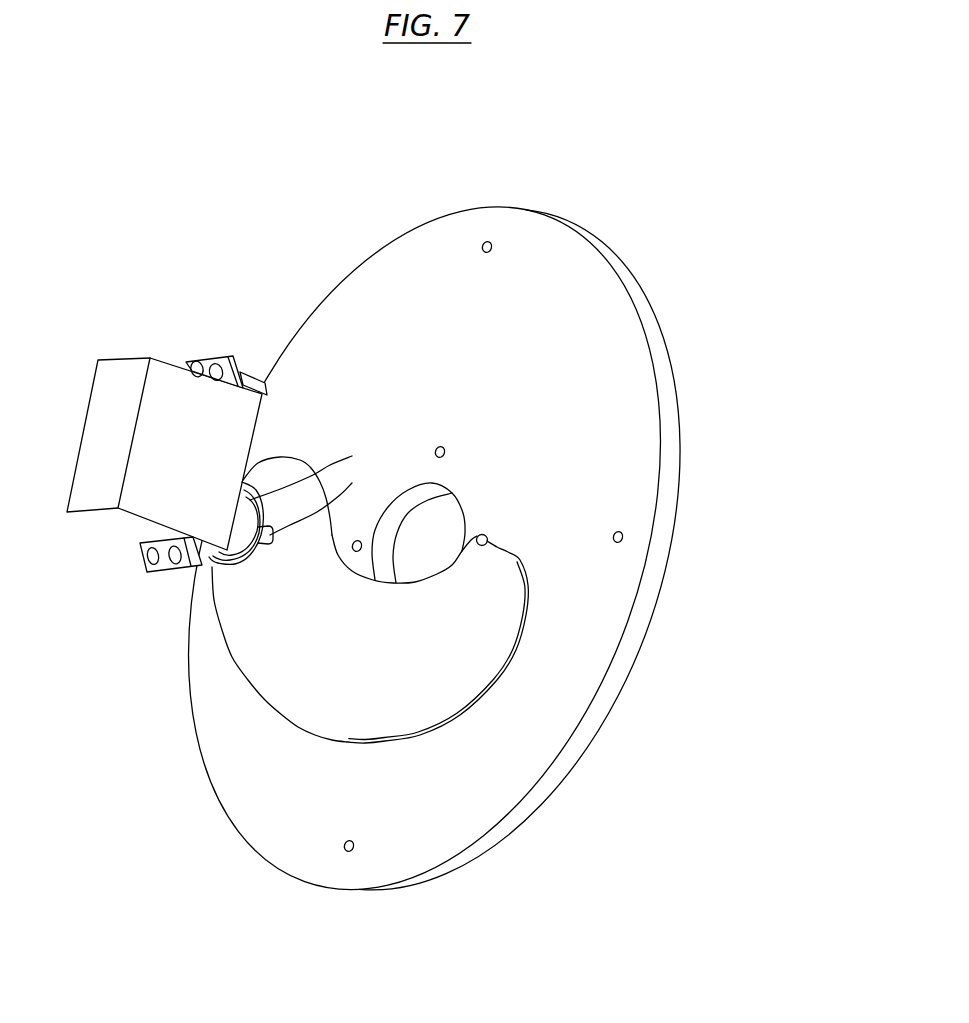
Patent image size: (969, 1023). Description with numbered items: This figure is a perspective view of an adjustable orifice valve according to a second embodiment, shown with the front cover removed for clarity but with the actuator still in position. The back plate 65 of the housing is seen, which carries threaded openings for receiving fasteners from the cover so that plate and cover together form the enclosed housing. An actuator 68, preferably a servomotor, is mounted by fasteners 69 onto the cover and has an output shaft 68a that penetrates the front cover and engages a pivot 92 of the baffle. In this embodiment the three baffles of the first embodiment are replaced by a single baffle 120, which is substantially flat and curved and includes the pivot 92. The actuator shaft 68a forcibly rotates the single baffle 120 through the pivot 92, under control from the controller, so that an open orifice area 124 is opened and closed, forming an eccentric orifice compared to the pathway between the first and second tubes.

The back plate 65 is at (615, 325).
The actuator 68 is at (113, 520).
The output shaft 68a is at (316, 470).
The fasteners 69 is at (193, 357).
The slotted pivot 92 is at (353, 483).
The single baffle 120 is at (487, 665).
The open orifice area 124 is at (427, 531).